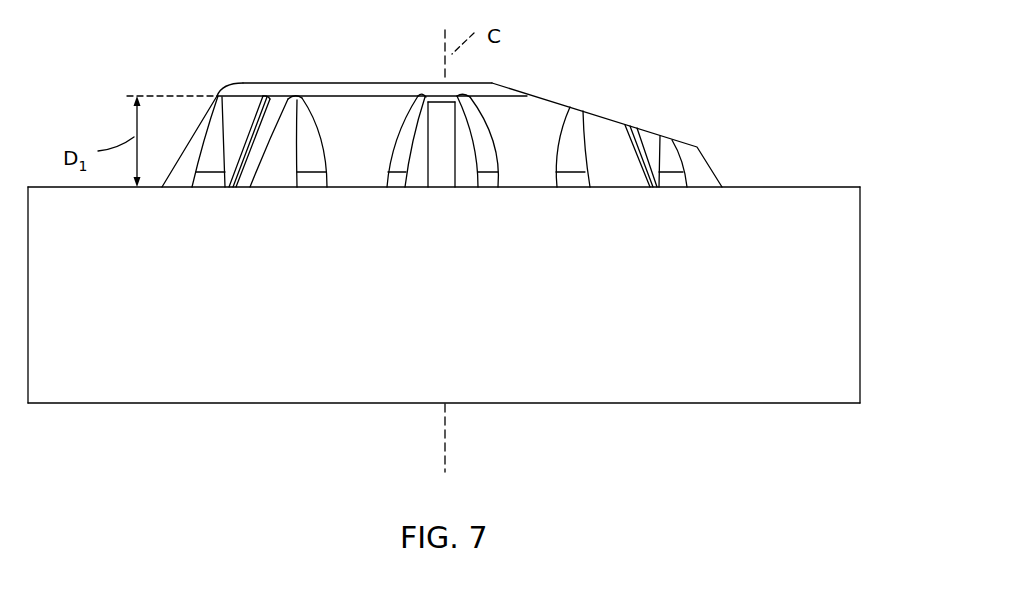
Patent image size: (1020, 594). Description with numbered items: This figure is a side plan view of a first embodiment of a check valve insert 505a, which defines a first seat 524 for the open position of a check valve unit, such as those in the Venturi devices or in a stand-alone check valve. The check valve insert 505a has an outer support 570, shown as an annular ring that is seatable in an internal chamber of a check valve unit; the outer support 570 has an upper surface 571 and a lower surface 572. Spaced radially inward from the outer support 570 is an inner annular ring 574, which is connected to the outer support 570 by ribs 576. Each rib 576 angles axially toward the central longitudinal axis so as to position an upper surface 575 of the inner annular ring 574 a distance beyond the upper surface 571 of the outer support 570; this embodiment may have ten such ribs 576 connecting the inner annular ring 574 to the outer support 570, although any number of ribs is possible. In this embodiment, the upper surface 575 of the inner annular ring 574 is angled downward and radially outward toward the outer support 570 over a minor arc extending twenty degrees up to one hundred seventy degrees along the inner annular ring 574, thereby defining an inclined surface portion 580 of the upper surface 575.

The check valve insert 505a is at (733, 27).
The first seat 524 is at (302, 77).
The outer support 570 is at (860, 295).
The upper surface of the outer support 571 is at (830, 186).
The lower surface of the outer support 572 is at (830, 404).
The inner annular ring 574 is at (216, 95).
The upper surface of the inner annular ring 575 is at (355, 81).
The rib 576 is at (460, 137).
The inclined surface portion 580 is at (645, 130).